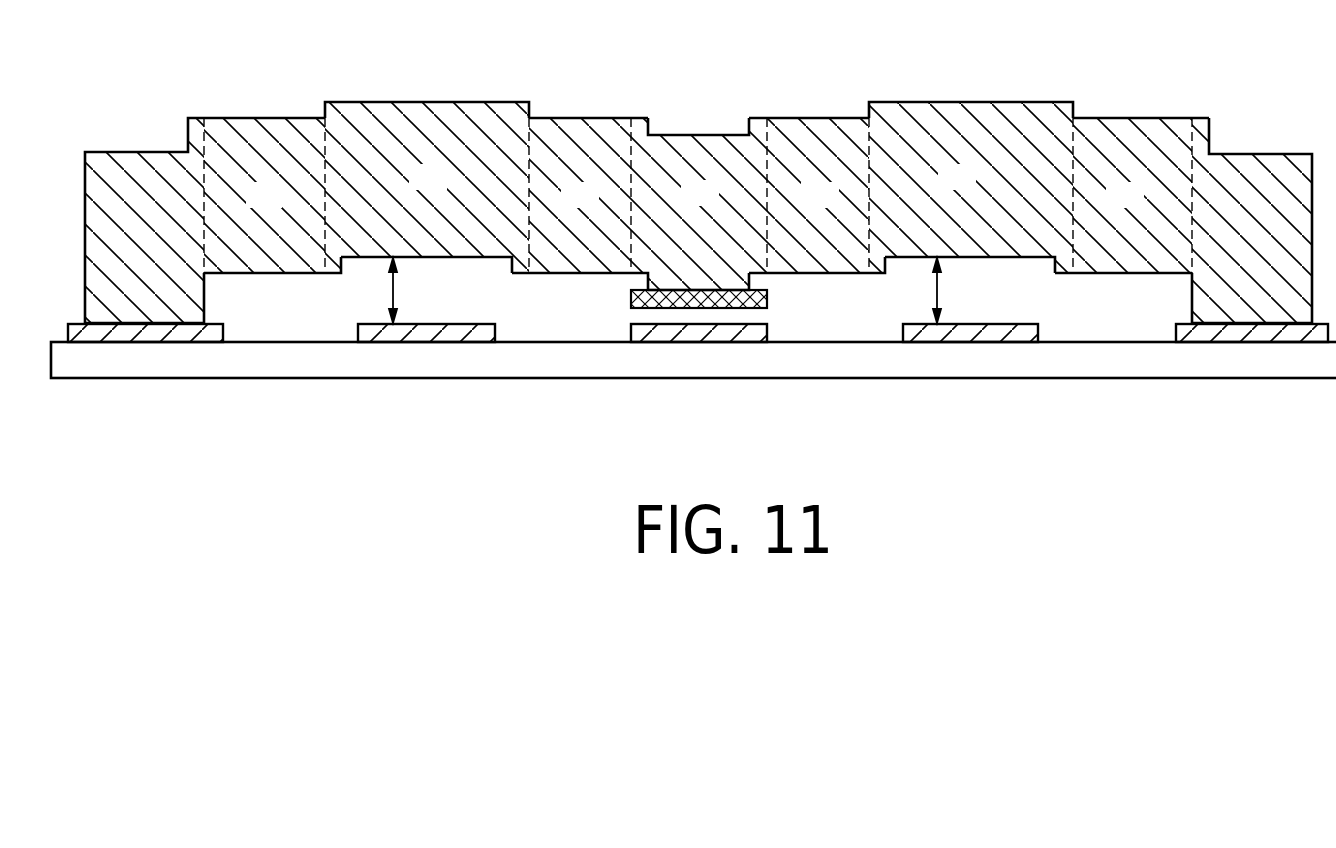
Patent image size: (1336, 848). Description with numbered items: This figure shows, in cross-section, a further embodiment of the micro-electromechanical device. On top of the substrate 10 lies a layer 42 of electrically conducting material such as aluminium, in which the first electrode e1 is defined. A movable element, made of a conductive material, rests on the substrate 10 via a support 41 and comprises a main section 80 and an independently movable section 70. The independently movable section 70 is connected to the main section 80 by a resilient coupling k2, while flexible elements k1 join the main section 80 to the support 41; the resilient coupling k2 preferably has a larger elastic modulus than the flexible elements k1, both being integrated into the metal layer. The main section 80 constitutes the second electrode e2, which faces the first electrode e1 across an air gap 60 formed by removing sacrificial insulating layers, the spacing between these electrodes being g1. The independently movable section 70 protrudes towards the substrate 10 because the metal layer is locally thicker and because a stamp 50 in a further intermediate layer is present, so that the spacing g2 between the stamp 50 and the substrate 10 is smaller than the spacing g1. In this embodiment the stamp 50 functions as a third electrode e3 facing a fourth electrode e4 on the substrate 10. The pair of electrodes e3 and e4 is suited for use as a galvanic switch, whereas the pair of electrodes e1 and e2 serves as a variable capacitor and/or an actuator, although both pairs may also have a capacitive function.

The substrate 10 is at (1188, 362).
The support 41 is at (135, 180).
The layer of electrically conducting material 42 is at (120, 333).
The stamp 50 is at (665, 300).
The air gap 60 is at (300, 314).
The independently movable section 70 is at (690, 125).
The main section 80 is at (415, 125).
The first electrode e1 is at (430, 330).
The second electrode e2 is at (692, 177).
The third electrode e3 is at (700, 193).
The fourth electrode e4 is at (735, 333).
The flexible elements k1 is at (706, 195).
The resilient coupling k2 is at (698, 204).
The spacing between first and second electrodes g1 is at (686, 290).
The spacing between stamp and substrate g2 is at (810, 323).